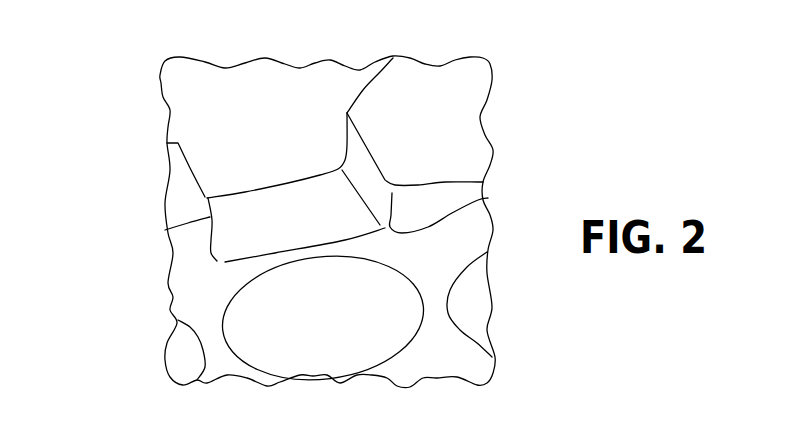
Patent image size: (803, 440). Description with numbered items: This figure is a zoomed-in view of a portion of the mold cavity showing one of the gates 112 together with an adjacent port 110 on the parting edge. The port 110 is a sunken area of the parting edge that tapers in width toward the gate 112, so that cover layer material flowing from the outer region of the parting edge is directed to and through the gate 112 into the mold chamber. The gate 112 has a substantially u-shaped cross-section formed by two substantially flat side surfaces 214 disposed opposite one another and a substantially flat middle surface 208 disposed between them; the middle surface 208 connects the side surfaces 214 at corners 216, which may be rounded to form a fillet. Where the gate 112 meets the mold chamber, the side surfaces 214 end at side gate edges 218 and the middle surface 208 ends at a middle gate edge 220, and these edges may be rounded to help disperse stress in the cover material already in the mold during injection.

The port 110 is at (290, 97).
The gate 112 is at (283, 213).
The middle surface 208 is at (252, 217).
The side surface 214 is at (362, 172).
The corner 216 is at (213, 257).
The side gate edge 218 is at (210, 235).
The middle gate edge 220 is at (278, 253).